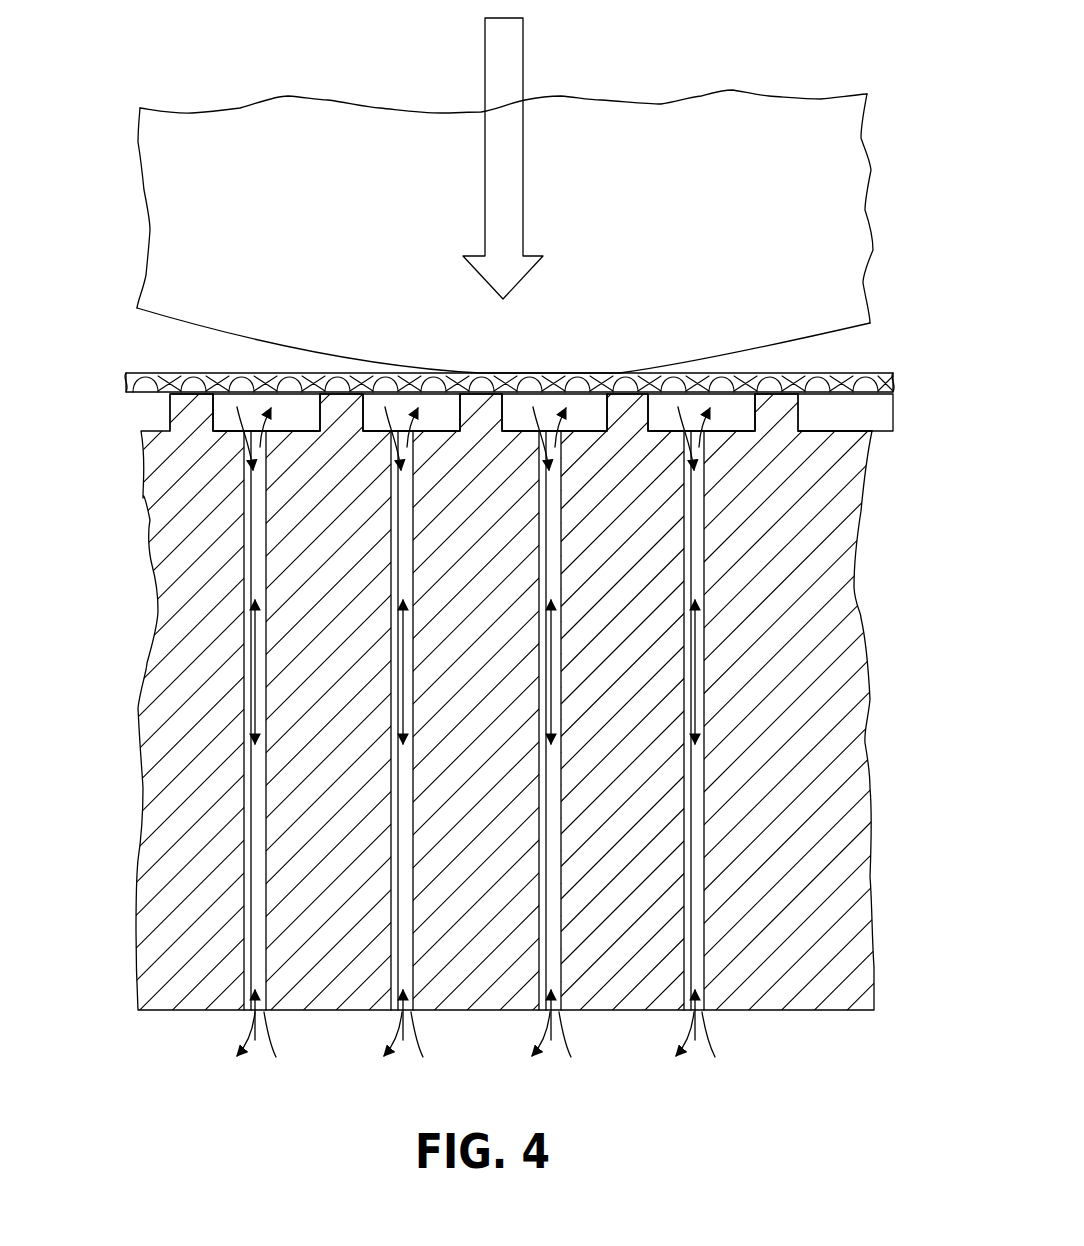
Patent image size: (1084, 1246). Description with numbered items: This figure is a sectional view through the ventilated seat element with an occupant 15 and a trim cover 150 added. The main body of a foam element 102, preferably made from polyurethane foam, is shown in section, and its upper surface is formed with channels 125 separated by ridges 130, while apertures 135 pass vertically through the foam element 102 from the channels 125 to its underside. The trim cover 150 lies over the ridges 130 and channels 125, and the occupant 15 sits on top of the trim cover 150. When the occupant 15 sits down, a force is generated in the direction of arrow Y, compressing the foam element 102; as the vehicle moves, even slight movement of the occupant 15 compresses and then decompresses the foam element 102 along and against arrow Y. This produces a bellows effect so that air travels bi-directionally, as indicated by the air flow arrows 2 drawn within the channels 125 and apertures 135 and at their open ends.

The occupant 15 is at (683, 229).
The arrow Y is at (505, 48).
The trim cover 150 is at (140, 372).
The channels 125 is at (293, 408).
The ridges 130 is at (170, 410).
The apertures 135 is at (264, 556).
The foam element 102 is at (162, 765).
The fluid flow 2 is at (402, 412).